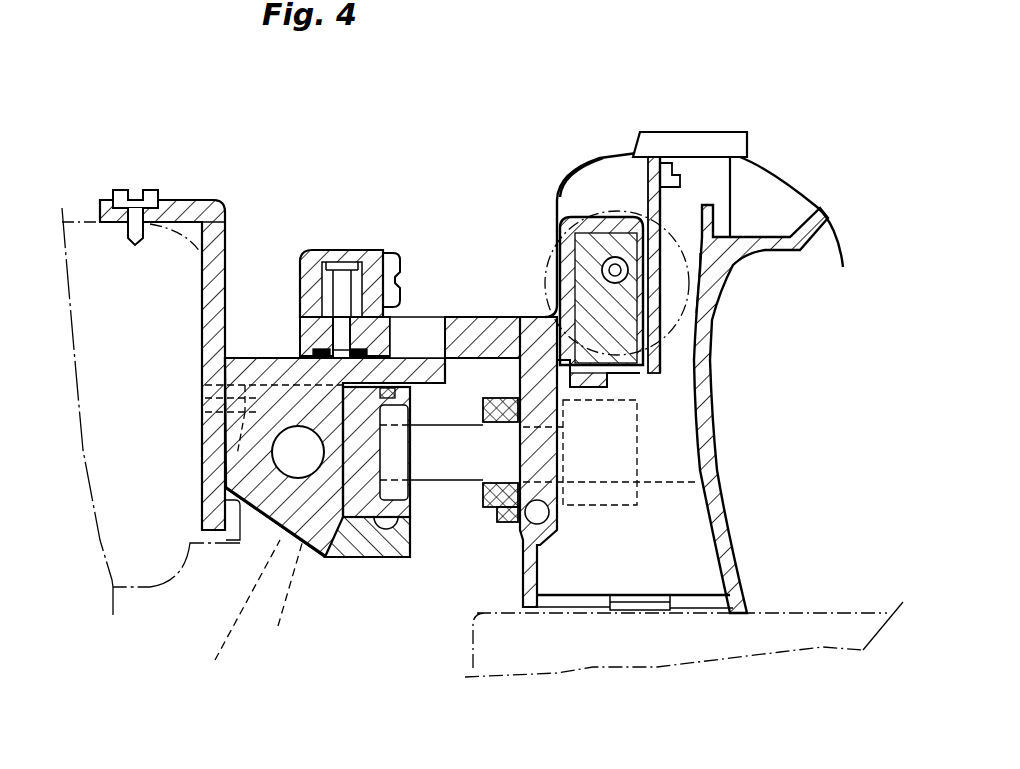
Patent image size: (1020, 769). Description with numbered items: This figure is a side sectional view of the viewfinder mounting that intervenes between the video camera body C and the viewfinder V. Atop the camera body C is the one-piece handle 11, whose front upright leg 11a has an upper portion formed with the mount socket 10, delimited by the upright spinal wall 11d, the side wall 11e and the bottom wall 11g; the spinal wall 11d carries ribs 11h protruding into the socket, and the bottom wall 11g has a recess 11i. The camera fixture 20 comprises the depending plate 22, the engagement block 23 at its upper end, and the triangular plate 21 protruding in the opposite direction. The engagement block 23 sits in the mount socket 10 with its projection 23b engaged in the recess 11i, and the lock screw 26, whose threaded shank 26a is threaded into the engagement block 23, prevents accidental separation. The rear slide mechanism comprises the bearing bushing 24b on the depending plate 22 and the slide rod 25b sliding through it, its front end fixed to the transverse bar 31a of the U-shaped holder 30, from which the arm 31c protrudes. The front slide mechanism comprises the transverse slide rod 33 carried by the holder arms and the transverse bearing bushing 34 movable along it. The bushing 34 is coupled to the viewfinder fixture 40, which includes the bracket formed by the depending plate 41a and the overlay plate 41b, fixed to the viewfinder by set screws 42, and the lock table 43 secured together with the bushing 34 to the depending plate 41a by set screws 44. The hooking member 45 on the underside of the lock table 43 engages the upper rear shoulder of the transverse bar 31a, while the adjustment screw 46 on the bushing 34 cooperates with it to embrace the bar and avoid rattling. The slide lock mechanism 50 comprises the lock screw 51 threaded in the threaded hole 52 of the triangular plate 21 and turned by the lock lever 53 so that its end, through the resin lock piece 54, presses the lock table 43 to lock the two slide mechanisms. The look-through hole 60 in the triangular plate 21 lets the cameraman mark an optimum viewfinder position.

The mount socket 10 is at (609, 180).
The handle 11 is at (818, 250).
The front upright leg 11a is at (742, 193).
The upright spinal wall 11d is at (622, 152).
The side wall 11e is at (596, 158).
The bottom wall 11g is at (640, 374).
The ribs 11h is at (714, 311).
The recess 11i is at (577, 393).
The camera fixture 20 is at (523, 523).
The triangular plate 21 is at (467, 327).
The depending plate 22 is at (567, 593).
The engagement block 23 is at (600, 347).
The projection 23b is at (655, 368).
The bearing bushing 24b is at (498, 395).
The slide rod 25b is at (453, 467).
The lock screw 26 is at (672, 250).
The threaded shank 26a is at (585, 235).
The holder 30 is at (357, 515).
The transverse bar 31a is at (313, 540).
The arm 31c is at (236, 619).
The transverse slide rod 33 is at (290, 463).
The transverse bearing bushing 34 is at (282, 599).
The viewfinder fixture 40 is at (250, 353).
The depending plate 41a is at (203, 298).
The overlay plate 41b is at (182, 200).
The set screws 42 is at (115, 187).
The lock table 43 is at (207, 378).
The set screws 44 is at (205, 405).
The hooking member 45 is at (410, 400).
The adjustment screw 46 is at (387, 515).
The slide lock mechanism 50 is at (380, 237).
The lock screw 51 is at (352, 287).
The threaded hole 52 is at (333, 250).
The lock lever 53 is at (313, 350).
The lock piece 54 is at (257, 355).
The look-through hole 60 is at (413, 330).
The viewfinder V is at (135, 333).
The video camera body C is at (760, 640).